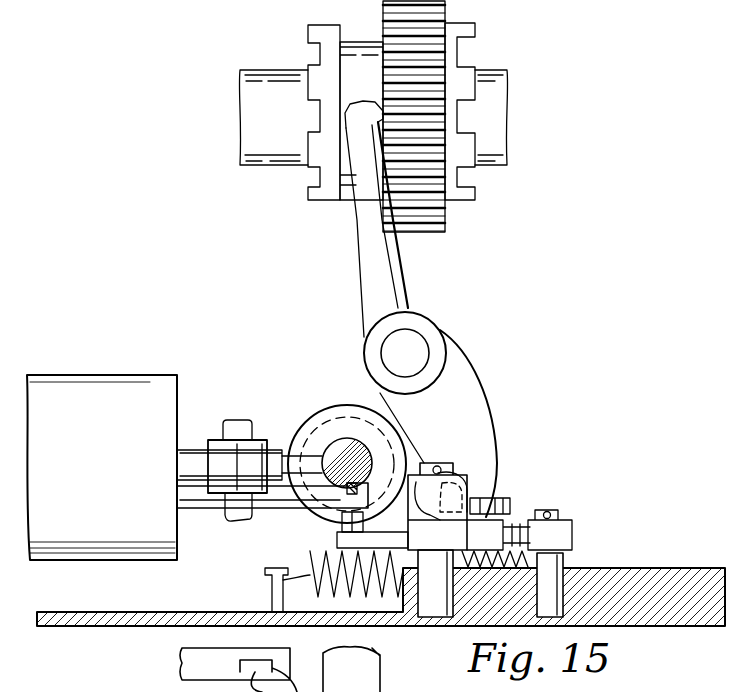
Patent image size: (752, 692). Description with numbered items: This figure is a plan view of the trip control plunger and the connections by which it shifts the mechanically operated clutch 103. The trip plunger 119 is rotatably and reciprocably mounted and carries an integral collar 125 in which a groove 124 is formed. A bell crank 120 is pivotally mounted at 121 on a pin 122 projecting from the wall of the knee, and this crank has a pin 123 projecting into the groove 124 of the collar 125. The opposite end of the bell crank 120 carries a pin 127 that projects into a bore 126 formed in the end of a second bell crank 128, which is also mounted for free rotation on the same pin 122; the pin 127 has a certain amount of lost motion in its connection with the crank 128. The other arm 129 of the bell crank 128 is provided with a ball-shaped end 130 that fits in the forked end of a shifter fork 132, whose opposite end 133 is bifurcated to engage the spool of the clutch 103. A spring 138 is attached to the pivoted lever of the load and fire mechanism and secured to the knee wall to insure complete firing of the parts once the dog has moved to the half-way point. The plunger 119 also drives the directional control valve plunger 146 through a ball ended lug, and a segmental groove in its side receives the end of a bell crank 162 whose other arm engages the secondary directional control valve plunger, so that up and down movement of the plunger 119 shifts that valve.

The clutch 103 is at (446, 17).
The bifurcated end of shifter fork 133 is at (366, 217).
The shifter fork 132 is at (426, 331).
The groove 124 is at (323, 417).
The collar 125 is at (334, 406).
The trip plunger 119 is at (328, 447).
The directional control valve plunger 146 is at (200, 512).
The bell crank 162 is at (206, 440).
The pin 123 is at (338, 526).
The bell crank 120 is at (336, 540).
The spring 138 is at (308, 563).
The pin 122 is at (430, 585).
The pivot 121 is at (450, 464).
The arm of bell crank 129 is at (468, 478).
The ball-shaped end 130 is at (468, 495).
The pin 127 is at (500, 498).
The bore 126 is at (508, 500).
The bell crank 128 is at (507, 513).